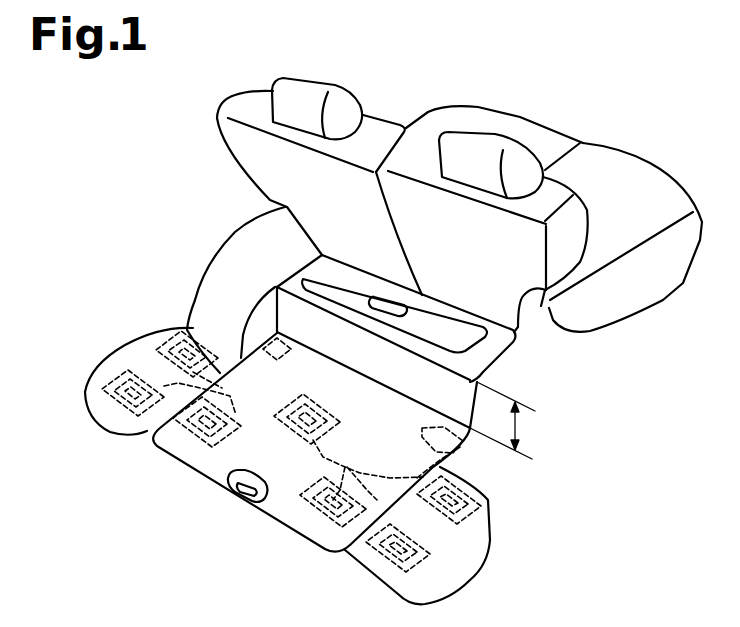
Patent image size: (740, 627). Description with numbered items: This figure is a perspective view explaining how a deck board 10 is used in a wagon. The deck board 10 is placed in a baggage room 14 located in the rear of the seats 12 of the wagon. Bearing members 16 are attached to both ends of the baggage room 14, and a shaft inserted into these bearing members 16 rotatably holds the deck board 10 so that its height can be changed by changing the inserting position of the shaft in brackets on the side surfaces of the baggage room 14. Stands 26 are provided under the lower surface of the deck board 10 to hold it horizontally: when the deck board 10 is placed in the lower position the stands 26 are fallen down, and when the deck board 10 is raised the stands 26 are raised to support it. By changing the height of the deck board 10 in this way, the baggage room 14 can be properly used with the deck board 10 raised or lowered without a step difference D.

The deck board 10 is at (211, 478).
The seats 12 is at (417, 145).
The baggage room 14 is at (155, 181).
The bearing members 16 is at (287, 352).
The stands 26 is at (232, 398).
The step difference D is at (515, 419).